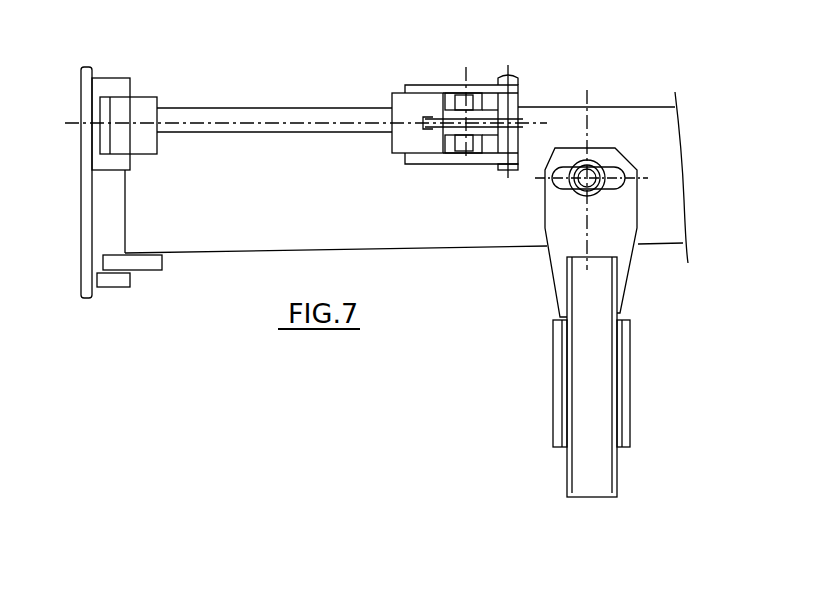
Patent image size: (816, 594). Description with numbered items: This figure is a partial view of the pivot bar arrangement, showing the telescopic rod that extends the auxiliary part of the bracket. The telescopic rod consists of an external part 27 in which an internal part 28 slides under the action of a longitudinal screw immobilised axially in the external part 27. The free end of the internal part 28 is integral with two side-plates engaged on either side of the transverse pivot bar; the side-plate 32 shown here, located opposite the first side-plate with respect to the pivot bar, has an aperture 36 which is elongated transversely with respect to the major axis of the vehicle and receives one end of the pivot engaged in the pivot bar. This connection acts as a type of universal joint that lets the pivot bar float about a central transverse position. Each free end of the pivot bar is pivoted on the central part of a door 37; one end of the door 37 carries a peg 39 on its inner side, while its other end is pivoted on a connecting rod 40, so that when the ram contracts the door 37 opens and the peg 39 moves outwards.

The external part 27 is at (627, 330).
The internal part 28 is at (606, 316).
The side-plate 32 is at (622, 212).
The aperture 36 is at (617, 175).
The door 37 is at (83, 222).
The peg 39 is at (126, 281).
The connecting rod 40 is at (263, 118).